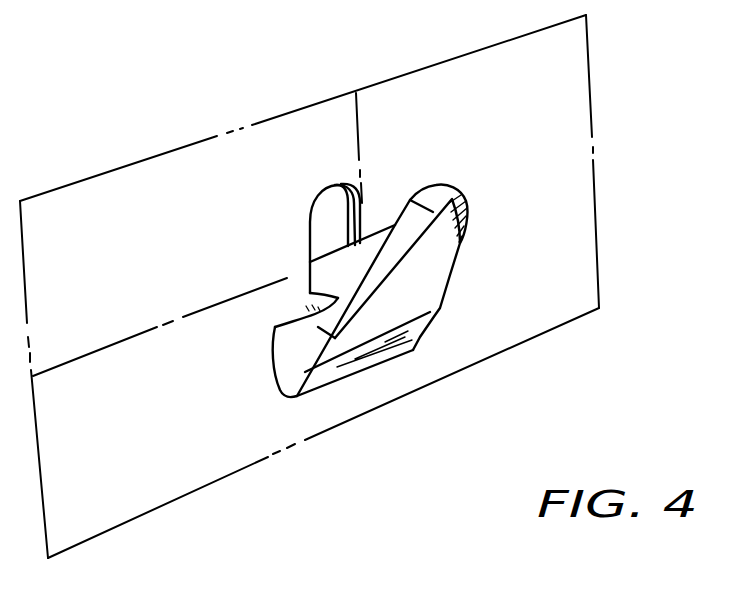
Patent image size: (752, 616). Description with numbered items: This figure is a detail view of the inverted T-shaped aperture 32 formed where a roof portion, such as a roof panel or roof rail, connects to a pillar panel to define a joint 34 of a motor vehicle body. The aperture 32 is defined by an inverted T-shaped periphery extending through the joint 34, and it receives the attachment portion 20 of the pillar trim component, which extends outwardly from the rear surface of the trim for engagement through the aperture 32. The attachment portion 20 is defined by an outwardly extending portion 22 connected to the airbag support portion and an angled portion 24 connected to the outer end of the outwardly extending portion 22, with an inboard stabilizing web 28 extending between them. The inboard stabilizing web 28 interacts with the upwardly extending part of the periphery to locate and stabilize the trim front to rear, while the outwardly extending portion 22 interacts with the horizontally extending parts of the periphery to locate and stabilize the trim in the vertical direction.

The attachment portion 20 is at (370, 260).
The outwardly extending portion 22 is at (286, 355).
The angled portion 24 is at (433, 261).
The inboard stabilizing web 28 is at (367, 247).
The aperture 32 is at (327, 208).
The joint 34 is at (197, 266).